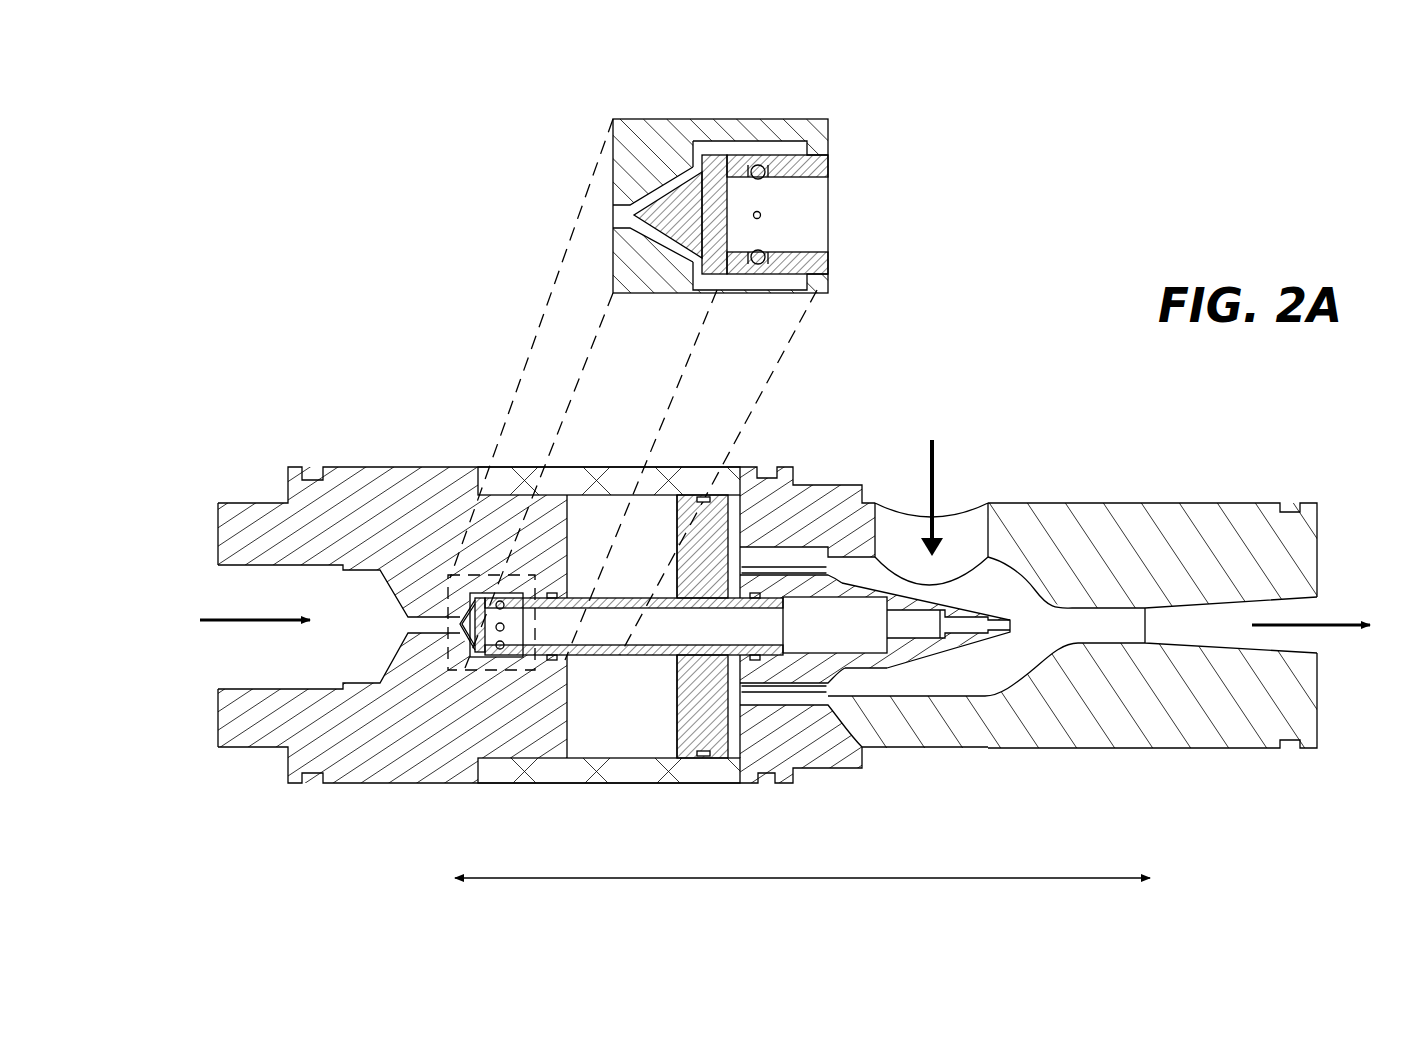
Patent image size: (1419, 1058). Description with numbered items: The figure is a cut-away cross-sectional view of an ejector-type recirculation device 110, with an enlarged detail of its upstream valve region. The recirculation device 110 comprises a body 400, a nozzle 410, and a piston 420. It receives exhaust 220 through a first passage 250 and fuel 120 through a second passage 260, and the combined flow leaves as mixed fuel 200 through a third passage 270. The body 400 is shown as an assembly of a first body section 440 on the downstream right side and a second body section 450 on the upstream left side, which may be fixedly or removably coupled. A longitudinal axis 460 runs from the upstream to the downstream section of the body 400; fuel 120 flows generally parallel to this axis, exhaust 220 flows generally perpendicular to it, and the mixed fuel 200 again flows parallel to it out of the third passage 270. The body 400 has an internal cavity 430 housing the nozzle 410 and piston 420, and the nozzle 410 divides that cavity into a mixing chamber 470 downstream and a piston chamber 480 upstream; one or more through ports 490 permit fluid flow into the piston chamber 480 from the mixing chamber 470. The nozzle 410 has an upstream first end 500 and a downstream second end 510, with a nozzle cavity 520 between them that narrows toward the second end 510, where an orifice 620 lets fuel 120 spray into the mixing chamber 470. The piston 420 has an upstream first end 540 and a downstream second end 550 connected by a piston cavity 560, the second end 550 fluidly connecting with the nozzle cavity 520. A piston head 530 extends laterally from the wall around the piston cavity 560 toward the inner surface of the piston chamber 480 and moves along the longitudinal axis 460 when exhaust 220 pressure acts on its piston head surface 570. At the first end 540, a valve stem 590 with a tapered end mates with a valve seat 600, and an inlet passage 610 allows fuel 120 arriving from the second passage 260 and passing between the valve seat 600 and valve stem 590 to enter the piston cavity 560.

The recirculation device 110 is at (225, 268).
The fuel 120 is at (235, 622).
The mixed fuel 200 is at (1334, 622).
The exhaust 220 is at (938, 480).
The first passage 250 is at (970, 530).
The second passage 260 is at (442, 622).
The third passage 270 is at (1105, 623).
The body 400 is at (1305, 478).
The nozzle 410 is at (917, 672).
The piston 420 is at (592, 706).
The internal cavity 430 is at (613, 723).
The first body section 440 is at (1295, 552).
The second body section 450 is at (255, 518).
The longitudinal axis 460 is at (1160, 873).
The mixing chamber 470 is at (1000, 582).
The piston chamber 480 is at (588, 527).
The through ports 490 is at (862, 507).
The first end of nozzle 500 is at (747, 723).
The second end of nozzle 510 is at (1003, 658).
The nozzle cavity 520 is at (817, 633).
The piston head 530 is at (722, 565).
The first end of piston 540 is at (483, 674).
The second end of piston 550 is at (763, 588).
The piston cavity 560 is at (587, 627).
The piston head surface 570 is at (733, 531).
The valve stem 590 is at (455, 592).
The valve seat 600 is at (657, 185).
The inlet passage 610 is at (763, 208).
The orifice 620 is at (1008, 632).